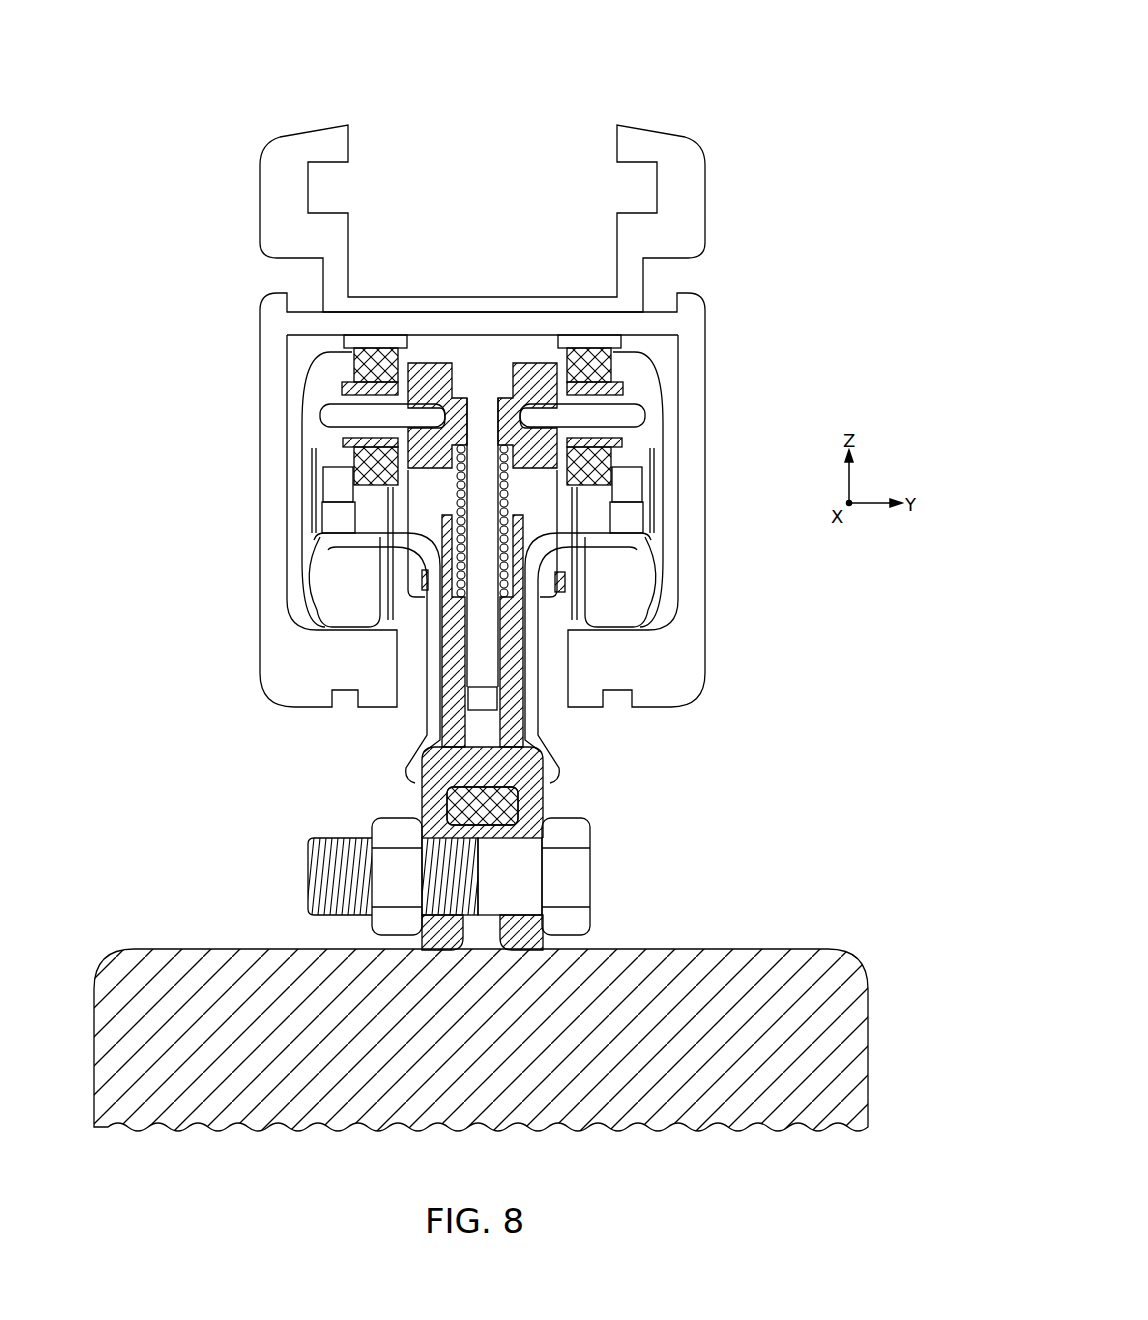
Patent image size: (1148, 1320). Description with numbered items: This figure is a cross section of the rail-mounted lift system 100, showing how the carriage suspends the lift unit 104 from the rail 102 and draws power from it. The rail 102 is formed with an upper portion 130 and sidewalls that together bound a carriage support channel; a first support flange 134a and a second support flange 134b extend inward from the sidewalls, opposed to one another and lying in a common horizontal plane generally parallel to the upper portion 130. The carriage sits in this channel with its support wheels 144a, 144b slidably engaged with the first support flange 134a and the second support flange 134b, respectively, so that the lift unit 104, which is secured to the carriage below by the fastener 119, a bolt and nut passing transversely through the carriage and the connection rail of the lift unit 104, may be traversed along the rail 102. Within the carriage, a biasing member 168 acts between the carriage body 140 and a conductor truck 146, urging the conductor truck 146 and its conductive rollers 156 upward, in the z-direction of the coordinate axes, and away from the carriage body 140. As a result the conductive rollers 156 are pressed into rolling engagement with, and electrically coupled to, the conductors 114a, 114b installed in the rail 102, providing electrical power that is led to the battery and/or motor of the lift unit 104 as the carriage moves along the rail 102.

The rail-mounted lift system 100 is at (855, 103).
The rail 102 is at (712, 148).
The lift unit 104 is at (760, 925).
The conductor 114a is at (388, 338).
The conductor 114b is at (574, 338).
The fastener 119 is at (588, 893).
The upper portion 130 is at (490, 338).
The first support flange 134a is at (283, 693).
The second support flange 134b is at (682, 693).
The carriage body 140 is at (423, 800).
The support wheel 144a is at (625, 572).
The support wheel 144b is at (340, 572).
The conductor truck 146 is at (432, 368).
The conductive roller 156 is at (363, 367).
The biasing member 168 is at (463, 490).